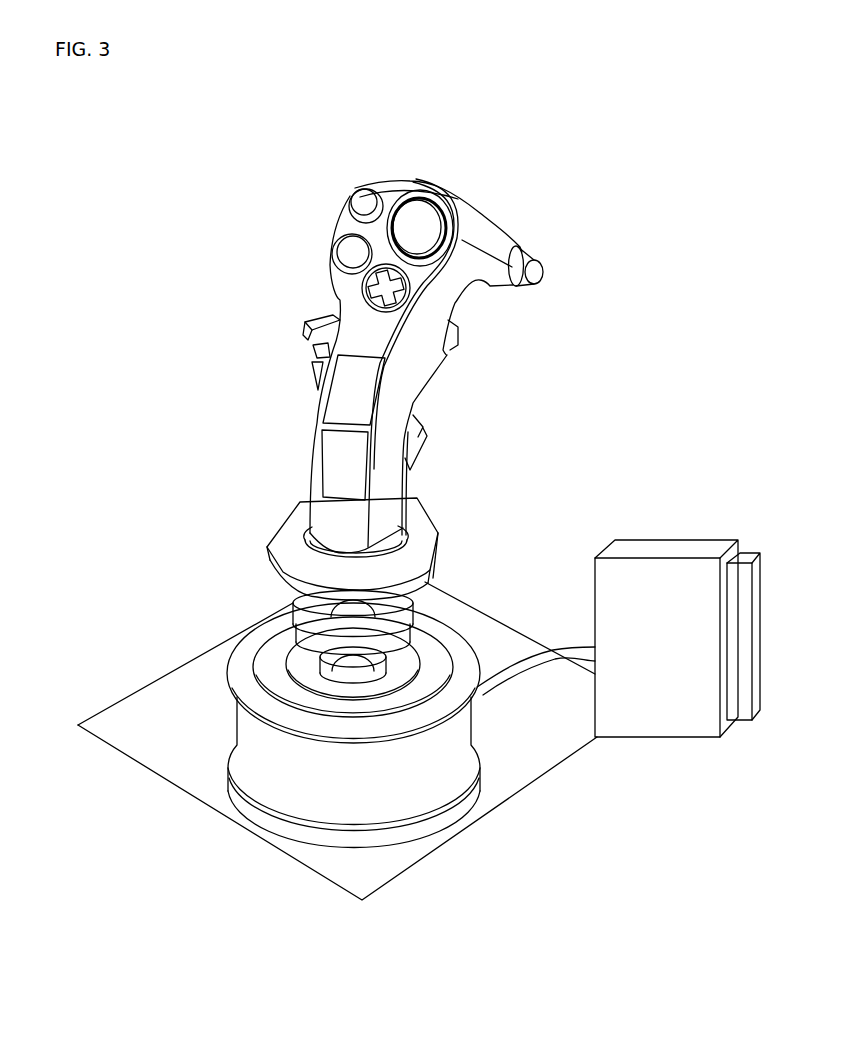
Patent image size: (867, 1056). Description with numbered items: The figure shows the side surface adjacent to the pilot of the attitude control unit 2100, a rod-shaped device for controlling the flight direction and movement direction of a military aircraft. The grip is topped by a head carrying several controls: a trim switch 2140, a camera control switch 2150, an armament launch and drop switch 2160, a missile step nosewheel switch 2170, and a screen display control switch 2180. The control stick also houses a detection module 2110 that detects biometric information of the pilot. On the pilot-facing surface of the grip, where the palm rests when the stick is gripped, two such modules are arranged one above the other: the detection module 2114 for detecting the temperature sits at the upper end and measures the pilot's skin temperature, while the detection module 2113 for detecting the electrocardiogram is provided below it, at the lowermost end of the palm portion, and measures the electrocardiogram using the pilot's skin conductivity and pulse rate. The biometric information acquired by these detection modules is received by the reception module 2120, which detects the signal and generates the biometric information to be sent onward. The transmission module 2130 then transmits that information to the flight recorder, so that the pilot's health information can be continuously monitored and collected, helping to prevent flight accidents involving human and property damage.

The attitude control unit 2100 is at (163, 108).
The detection module 2110 is at (340, 252).
The detection module for detecting the electrocardiogram 2113 is at (333, 462).
The detection module for detecting the temperature 2114 is at (340, 390).
The reception module 2120 is at (290, 785).
The transmission module 2130 is at (743, 558).
The trim switch 2140 is at (417, 213).
The camera control switch 2150 is at (303, 323).
The armament launch and drop switch 2160 is at (349, 205).
The missile step nosewheel switch 2170 is at (540, 277).
The screen display control switch 2180 is at (400, 303).